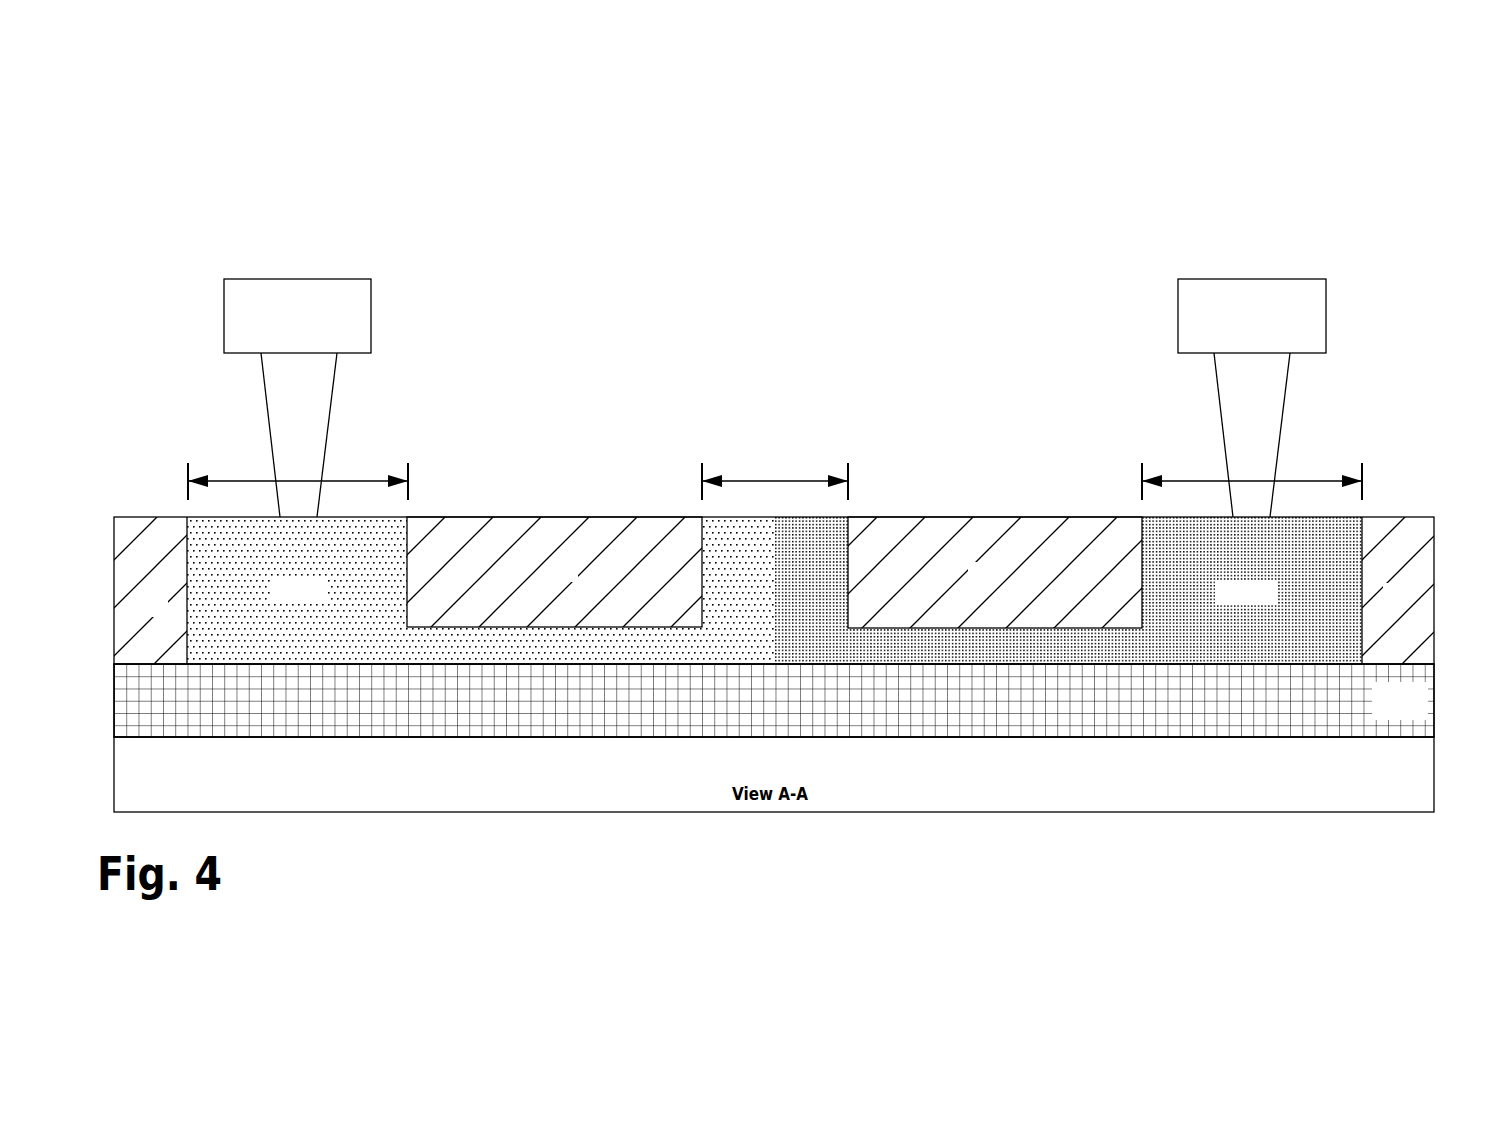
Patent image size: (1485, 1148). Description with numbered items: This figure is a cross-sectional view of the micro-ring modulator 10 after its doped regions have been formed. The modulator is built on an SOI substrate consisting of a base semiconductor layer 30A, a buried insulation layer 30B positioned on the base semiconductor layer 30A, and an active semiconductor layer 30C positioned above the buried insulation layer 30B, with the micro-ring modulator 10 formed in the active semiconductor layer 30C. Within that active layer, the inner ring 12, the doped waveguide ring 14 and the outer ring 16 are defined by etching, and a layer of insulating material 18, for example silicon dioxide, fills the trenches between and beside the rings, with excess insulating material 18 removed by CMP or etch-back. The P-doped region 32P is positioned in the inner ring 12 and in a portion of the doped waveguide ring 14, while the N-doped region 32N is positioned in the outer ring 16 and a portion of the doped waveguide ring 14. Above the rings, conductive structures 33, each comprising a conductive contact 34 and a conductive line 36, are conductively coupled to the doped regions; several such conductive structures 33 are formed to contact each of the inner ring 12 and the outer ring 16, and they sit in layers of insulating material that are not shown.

The micro-ring modulator 10 is at (212, 162).
The inner ring 12 is at (242, 484).
The doped waveguide ring 14 is at (787, 480).
The outer ring 16 is at (1190, 480).
The layer of insulating material 18 is at (142, 616).
The base semiconductor layer 30A is at (1380, 791).
The buried insulation layer 30B is at (1380, 714).
The active semiconductor layer 30C is at (1335, 563).
The P-doped region 32P is at (317, 601).
The N-doped region 32N is at (1265, 602).
The conductive structures 33 is at (200, 256).
The conductive contact 34 is at (287, 399).
The conductive line 36 is at (287, 327).